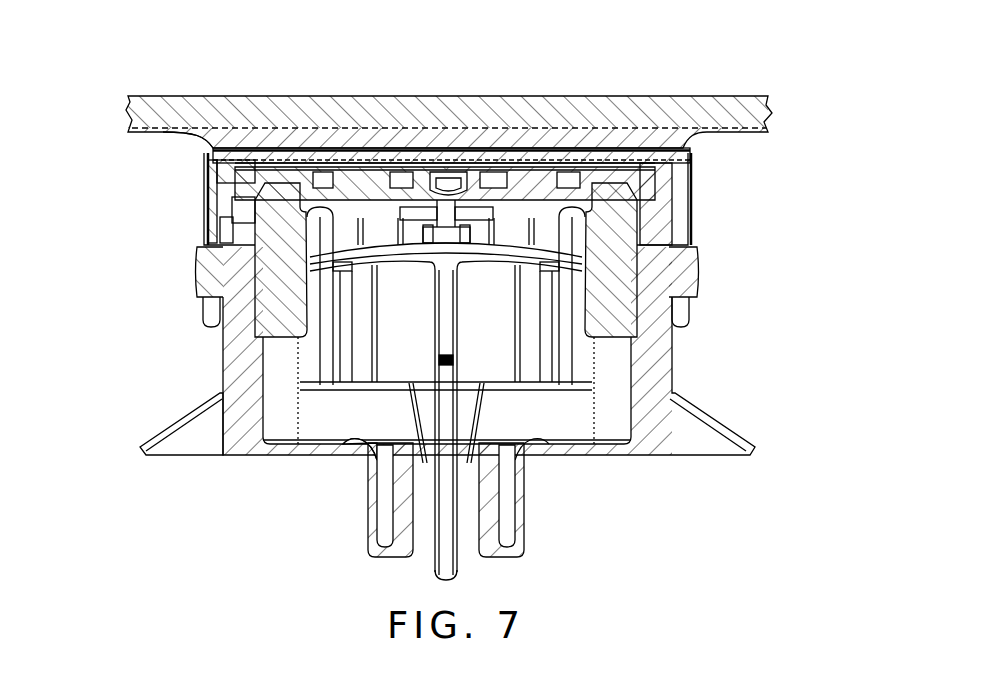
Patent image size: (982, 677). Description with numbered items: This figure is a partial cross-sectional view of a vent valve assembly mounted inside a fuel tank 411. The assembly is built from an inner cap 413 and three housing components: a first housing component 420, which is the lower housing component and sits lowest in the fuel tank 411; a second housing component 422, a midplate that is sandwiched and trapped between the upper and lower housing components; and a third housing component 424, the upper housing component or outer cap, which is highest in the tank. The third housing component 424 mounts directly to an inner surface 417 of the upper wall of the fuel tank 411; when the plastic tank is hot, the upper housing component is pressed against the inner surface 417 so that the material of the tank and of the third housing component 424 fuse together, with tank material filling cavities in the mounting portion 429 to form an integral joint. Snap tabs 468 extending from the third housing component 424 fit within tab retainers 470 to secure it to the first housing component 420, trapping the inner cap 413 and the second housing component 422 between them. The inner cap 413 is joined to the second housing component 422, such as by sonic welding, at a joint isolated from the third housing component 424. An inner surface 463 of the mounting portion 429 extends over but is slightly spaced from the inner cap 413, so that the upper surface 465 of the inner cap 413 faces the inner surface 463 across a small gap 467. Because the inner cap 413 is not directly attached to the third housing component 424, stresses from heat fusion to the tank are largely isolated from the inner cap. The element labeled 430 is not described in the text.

The fuel tank 411 is at (727, 95).
The inner cap 413 is at (600, 170).
The inner surface 417 is at (150, 145).
The first housing component 420 is at (652, 388).
The second housing component 422 is at (612, 258).
The third housing component 424 is at (253, 140).
The mounting portion 429 is at (340, 140).
The lower bracket 430 is at (372, 378).
The inner surface 463 is at (233, 195).
The upper surface 465 is at (503, 150).
The gap 467 is at (418, 148).
The snap tabs 468 is at (203, 322).
The tab retainers 470 is at (210, 272).